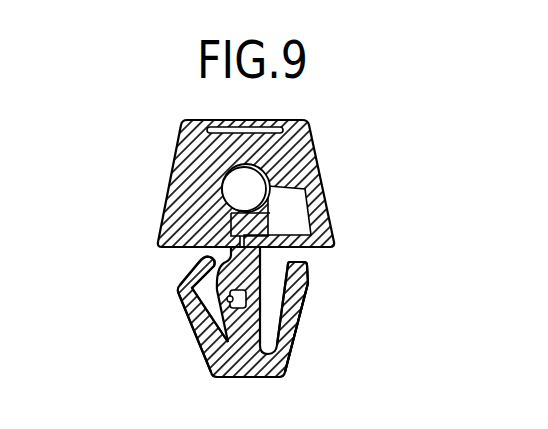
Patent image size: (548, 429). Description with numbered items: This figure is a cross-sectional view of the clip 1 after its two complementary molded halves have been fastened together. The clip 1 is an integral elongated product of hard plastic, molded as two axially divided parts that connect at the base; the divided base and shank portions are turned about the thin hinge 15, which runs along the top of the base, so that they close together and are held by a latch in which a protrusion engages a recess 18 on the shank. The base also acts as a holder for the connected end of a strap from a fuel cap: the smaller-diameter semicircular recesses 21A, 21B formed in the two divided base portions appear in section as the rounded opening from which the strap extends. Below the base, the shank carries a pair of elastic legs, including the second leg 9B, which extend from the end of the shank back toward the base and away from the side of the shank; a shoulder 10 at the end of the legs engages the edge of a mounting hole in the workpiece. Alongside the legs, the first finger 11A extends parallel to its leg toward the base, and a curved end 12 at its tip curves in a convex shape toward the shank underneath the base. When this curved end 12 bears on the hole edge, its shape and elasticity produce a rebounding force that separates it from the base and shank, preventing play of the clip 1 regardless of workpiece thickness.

The clip 1 is at (434, 145).
The thin hinge 15 is at (240, 120).
The semicircular recess 21A is at (227, 213).
The semicircular recess 21B is at (268, 174).
The curved end 12 is at (208, 256).
The first finger 11A is at (190, 324).
The recess 18 is at (229, 300).
The shoulder 10 is at (308, 290).
The second leg 9B is at (296, 330).